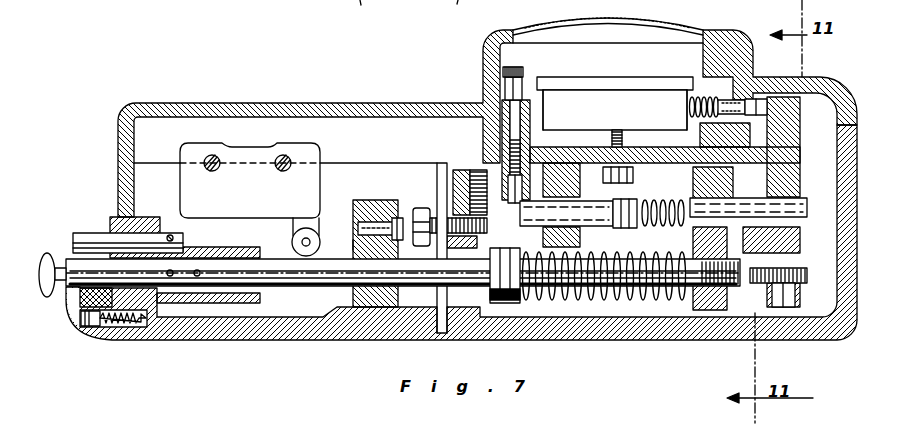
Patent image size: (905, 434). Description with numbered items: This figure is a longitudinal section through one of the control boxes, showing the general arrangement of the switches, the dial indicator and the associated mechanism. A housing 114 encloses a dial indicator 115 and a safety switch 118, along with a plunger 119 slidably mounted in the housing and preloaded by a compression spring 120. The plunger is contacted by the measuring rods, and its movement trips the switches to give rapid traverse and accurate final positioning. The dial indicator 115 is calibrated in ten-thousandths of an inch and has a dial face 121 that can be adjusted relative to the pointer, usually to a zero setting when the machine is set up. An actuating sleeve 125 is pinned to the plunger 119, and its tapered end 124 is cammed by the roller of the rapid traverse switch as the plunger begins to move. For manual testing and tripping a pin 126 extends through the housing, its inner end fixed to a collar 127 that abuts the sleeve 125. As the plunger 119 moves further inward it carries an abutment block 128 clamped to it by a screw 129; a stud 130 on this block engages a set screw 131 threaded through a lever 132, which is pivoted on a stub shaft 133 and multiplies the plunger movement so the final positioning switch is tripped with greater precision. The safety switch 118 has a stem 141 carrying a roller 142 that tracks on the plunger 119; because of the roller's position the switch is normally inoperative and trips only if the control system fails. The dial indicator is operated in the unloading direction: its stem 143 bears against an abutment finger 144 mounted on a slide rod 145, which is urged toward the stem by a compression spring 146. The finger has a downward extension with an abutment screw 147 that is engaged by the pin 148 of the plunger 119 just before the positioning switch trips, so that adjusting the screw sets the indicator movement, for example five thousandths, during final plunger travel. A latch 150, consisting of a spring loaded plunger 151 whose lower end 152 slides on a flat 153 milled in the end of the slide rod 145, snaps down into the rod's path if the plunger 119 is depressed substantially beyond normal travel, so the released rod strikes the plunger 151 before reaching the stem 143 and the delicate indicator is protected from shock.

The housing 114 is at (235, 103).
The dial indicator 115 is at (645, 107).
The safety switch 118 is at (258, 153).
The plunger 119 is at (573, 293).
The compression spring 120 is at (645, 298).
The dial face 121 is at (617, 78).
The tapered end 124 is at (265, 302).
The actuating sleeve 125 is at (213, 303).
The pin 126 is at (91, 233).
The collar 127 is at (165, 222).
The abutment block 128 is at (353, 213).
The screw 129 is at (351, 247).
The stud 130 is at (380, 224).
The set screw 131 is at (437, 263).
The lever 132 is at (442, 209).
The stub shaft 133 is at (438, 334).
The stem 141 is at (304, 230).
The roller 142 is at (296, 241).
The stem 143 is at (757, 97).
The abutment finger 144 is at (788, 130).
The slide rod 145 is at (782, 206).
The compression spring 146 is at (672, 230).
The abutment screw 147 is at (762, 312).
The pin 148 is at (739, 320).
The latch 150 is at (506, 85).
The spring loaded plunger 151 is at (528, 121).
The lower end 152 is at (508, 186).
The flat 153 is at (524, 208).